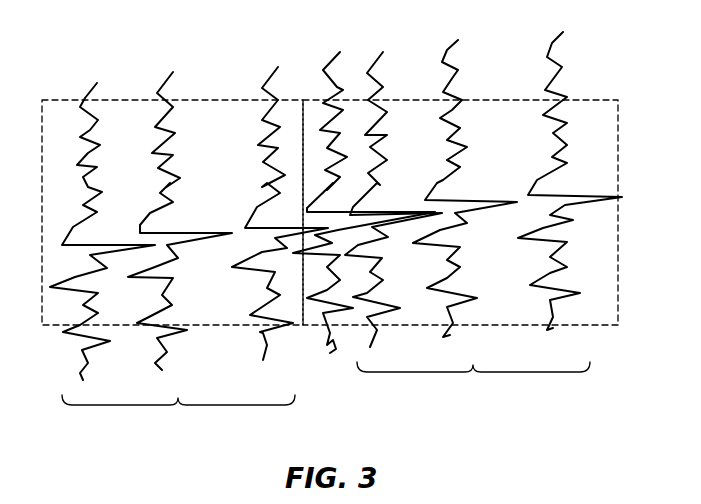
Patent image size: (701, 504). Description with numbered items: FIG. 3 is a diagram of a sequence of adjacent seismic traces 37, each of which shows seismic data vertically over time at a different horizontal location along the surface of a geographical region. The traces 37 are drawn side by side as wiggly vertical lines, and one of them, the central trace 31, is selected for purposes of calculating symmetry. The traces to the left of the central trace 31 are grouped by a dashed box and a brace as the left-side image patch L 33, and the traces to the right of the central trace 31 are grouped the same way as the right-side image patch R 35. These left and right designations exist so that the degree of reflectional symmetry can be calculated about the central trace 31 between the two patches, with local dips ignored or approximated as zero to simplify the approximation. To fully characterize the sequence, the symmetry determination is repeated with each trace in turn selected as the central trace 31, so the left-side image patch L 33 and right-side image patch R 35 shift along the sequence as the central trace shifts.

The central trace 31 is at (329, 338).
The left-side image patch L 33 is at (172, 269).
The right-side image patch R 35 is at (460, 253).
The seismic traces 37 is at (84, 99).